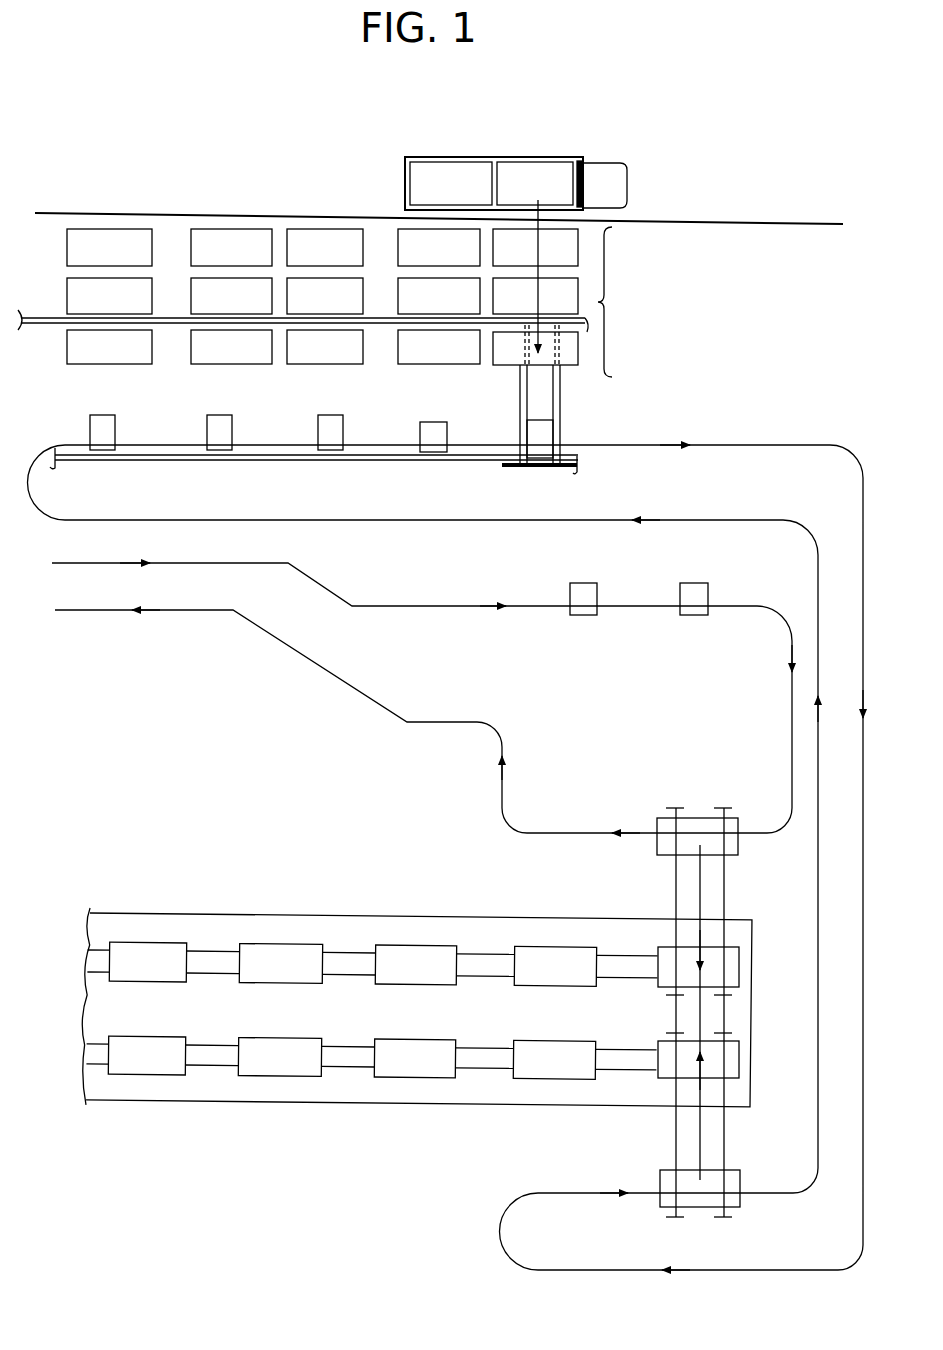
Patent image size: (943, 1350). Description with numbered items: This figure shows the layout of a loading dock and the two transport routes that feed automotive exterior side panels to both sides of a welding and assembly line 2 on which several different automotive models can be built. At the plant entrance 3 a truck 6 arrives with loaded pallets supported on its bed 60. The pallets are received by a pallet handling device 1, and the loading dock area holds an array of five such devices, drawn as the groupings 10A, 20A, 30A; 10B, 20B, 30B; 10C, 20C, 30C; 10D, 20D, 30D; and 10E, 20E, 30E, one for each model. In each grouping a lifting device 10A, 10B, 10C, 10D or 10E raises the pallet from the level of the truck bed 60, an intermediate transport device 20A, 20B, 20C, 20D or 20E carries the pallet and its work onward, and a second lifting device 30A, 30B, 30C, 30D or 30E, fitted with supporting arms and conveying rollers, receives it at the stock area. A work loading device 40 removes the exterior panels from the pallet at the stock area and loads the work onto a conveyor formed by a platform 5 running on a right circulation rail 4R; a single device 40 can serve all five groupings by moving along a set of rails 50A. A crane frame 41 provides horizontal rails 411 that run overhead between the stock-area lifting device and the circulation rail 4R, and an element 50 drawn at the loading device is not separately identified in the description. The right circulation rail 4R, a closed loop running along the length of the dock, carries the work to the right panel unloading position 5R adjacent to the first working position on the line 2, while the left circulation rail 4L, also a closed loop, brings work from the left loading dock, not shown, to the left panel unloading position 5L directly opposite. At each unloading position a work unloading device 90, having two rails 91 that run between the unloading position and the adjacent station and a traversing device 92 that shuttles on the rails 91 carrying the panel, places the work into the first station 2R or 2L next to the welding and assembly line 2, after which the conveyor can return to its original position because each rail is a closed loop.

The pallet handling device 1 is at (617, 302).
The welding and assembly line 2 is at (125, 912).
The first station (left) 2L is at (738, 958).
The first station (right) 2R is at (738, 1056).
The entrance 3 is at (711, 225).
The left circulation rail 4L is at (421, 605).
The right circulation rail 4R is at (728, 445).
The platform 5 is at (433, 441).
The left panel unloading position 5L is at (696, 815).
The right panel unloading position 5R is at (742, 1207).
The truck 6 is at (597, 168).
The truck bed 60 is at (471, 178).
The lifting device 10A is at (535, 247).
The lifting device 10B is at (439, 247).
The lifting device 10C is at (325, 247).
The lifting device 10D is at (231, 247).
The lifting device 10E is at (109, 247).
The intermediate transport device 20A is at (535, 296).
The intermediate transport device 20B is at (439, 296).
The intermediate transport device 20C is at (325, 296).
The intermediate transport device 20D is at (231, 296).
The intermediate transport device 20E is at (109, 296).
The lifting device 30A is at (506, 364).
The lifting device 30B is at (439, 347).
The lifting device 30C is at (325, 347).
The lifting device 30D is at (231, 347).
The lifting device 30E is at (109, 347).
The work loading device 40 is at (518, 398).
The crane frame 41 is at (562, 393).
The horizontal rails 411 is at (520, 412).
The carrier on lift 50 is at (540, 433).
The set of rails 50A is at (56, 326).
The work unloading device 90 is at (670, 876).
The rails 91 is at (727, 878).
The traversing device 92 is at (735, 818).